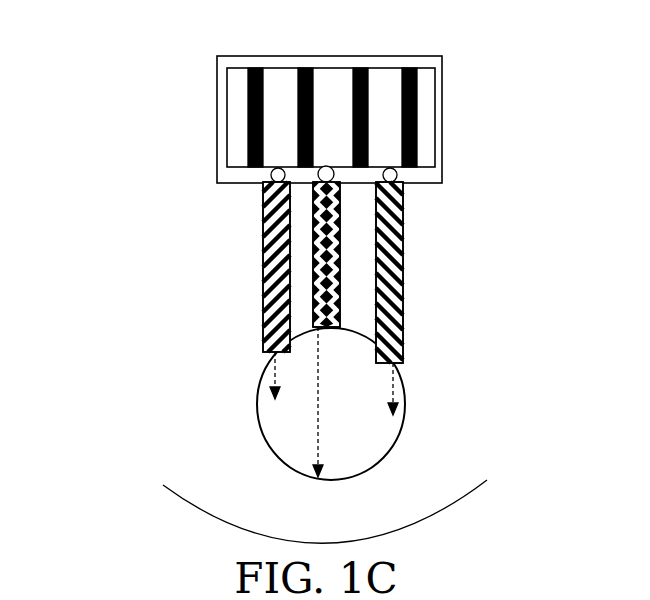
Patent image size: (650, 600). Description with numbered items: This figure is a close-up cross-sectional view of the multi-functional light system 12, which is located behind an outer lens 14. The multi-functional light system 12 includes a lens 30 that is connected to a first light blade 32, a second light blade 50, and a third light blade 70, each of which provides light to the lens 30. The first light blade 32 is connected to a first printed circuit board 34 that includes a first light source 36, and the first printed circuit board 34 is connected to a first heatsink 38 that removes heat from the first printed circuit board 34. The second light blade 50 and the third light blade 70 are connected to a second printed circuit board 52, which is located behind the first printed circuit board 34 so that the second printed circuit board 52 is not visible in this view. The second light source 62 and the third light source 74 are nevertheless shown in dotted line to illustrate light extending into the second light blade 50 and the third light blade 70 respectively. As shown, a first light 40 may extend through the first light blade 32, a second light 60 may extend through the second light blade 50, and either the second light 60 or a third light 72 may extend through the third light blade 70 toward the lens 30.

The multi-functional light system 12 is at (538, 336).
The outer lens 14 is at (188, 505).
The lens 30 is at (386, 455).
The first light blade 32 is at (313, 275).
The first printed circuit board 34 is at (445, 55).
The first light source 36 is at (318, 172).
The first heatsink 38 is at (425, 147).
The first light 40 is at (314, 427).
The second light blade 50 is at (263, 187).
The second printed circuit board 52 is at (198, 78).
The second light 60 is at (267, 374).
The second light source 62 is at (271, 175).
The third light blade 70 is at (392, 247).
The third light 72 is at (396, 392).
The third light source 74 is at (397, 176).